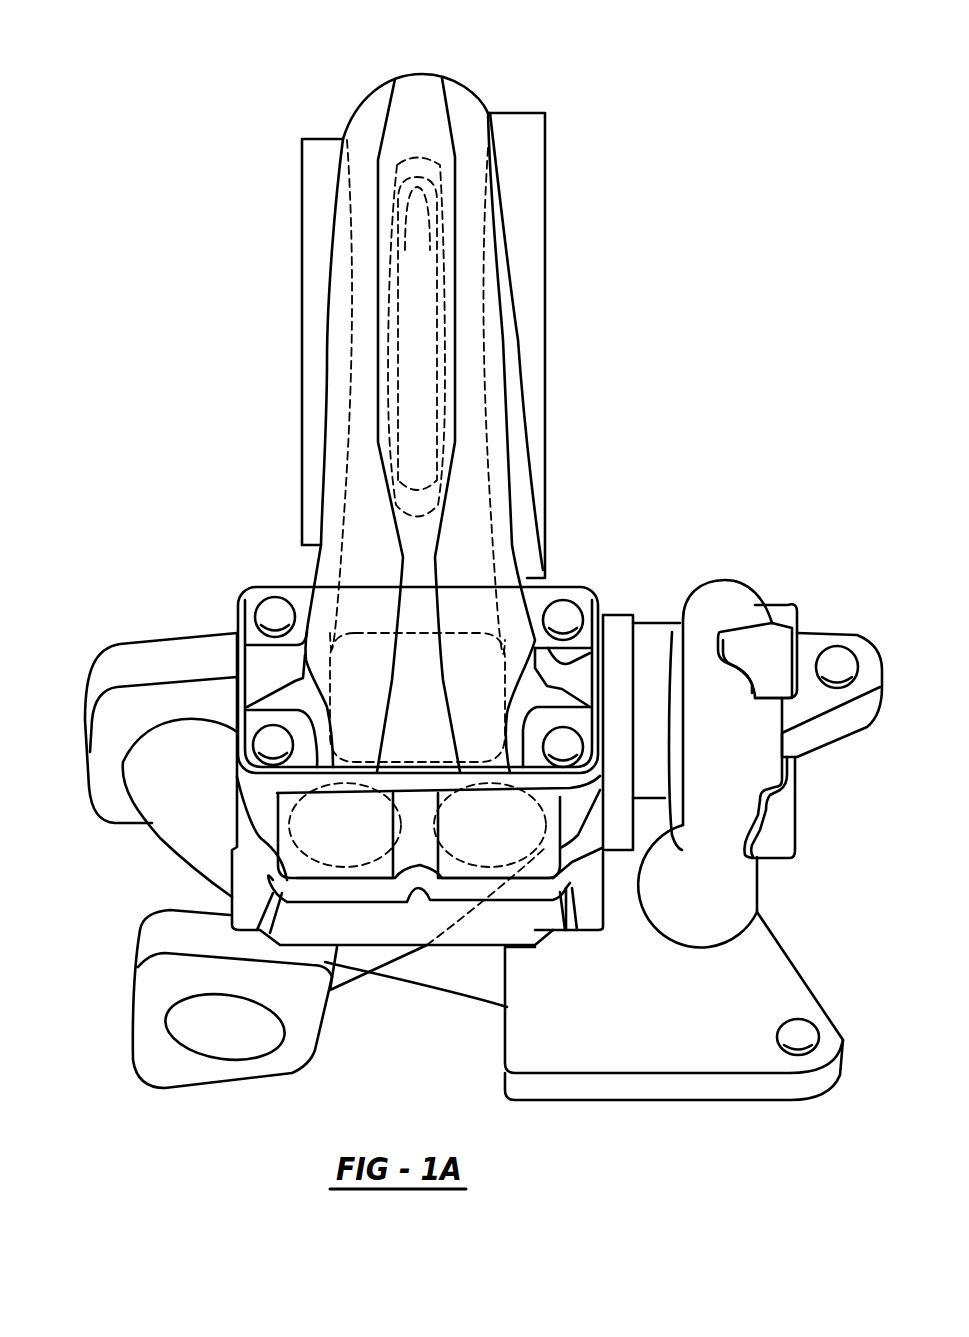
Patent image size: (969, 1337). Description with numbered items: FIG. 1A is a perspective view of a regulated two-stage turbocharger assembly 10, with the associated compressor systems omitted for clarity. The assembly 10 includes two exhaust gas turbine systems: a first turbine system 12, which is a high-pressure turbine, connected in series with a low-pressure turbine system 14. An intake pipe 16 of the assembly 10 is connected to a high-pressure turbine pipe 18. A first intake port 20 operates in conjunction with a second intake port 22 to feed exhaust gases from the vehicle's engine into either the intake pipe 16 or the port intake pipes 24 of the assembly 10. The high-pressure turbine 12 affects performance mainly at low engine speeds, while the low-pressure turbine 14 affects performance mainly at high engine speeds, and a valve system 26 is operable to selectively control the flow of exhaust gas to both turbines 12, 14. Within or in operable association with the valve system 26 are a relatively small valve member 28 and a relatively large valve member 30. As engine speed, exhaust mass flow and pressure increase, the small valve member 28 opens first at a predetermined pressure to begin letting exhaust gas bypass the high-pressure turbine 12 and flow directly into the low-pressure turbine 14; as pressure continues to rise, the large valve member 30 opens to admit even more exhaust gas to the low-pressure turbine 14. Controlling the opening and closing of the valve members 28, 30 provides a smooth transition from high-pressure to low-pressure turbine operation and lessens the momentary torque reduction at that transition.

The regulated two-stage turbocharger assembly 10 is at (608, 171).
The first turbine system 12 is at (730, 542).
The low-pressure turbine system 14 is at (268, 233).
The intake pipe 16 is at (478, 1015).
The high-pressure turbine pipe 18 is at (782, 888).
The first intake port 20 is at (156, 1095).
The second intake port 22 is at (153, 626).
The port intake pipes 24 is at (225, 898).
The valve system 26 is at (240, 598).
The small valve member 28 is at (498, 868).
The large valve member 30 is at (345, 868).